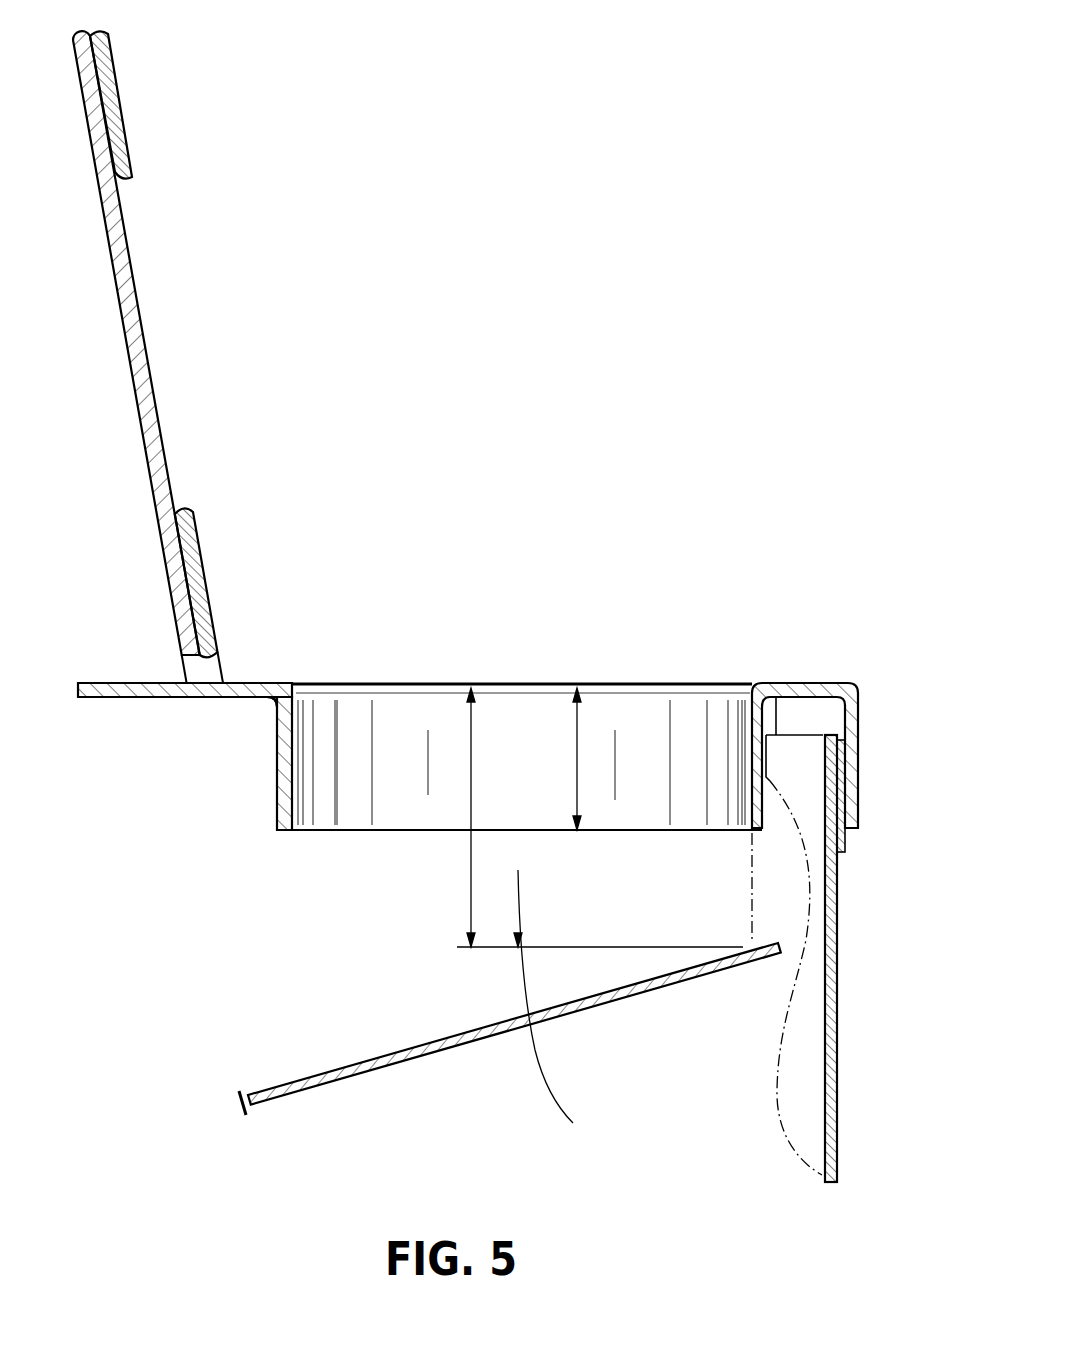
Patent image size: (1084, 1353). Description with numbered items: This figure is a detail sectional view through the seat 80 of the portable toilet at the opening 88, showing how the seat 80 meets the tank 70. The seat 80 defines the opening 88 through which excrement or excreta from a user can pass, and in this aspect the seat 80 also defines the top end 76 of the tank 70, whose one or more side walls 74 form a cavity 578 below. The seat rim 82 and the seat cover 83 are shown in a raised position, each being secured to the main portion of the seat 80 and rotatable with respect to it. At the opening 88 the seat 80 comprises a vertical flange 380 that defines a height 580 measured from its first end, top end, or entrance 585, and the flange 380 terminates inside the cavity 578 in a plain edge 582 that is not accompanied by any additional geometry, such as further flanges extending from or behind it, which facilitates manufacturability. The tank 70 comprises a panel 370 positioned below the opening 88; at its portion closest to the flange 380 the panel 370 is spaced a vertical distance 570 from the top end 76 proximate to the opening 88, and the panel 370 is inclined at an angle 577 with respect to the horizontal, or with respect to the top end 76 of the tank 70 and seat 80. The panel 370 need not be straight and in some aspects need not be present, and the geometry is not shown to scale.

The seat cover 83 is at (134, 392).
The seat rim 82 is at (208, 577).
The entrance 585 is at (290, 686).
The plain edge 582 is at (285, 830).
The opening 88 is at (521, 659).
The flange 380 is at (385, 810).
The height 580 is at (578, 730).
The distance 570 is at (465, 878).
The angle 577 is at (545, 1065).
The cavity 578 is at (270, 1002).
The panel 370 is at (355, 1080).
The top end 76 is at (796, 682).
The seat 80 is at (808, 681).
The tank 70 is at (855, 958).
The side wall 74 is at (838, 927).